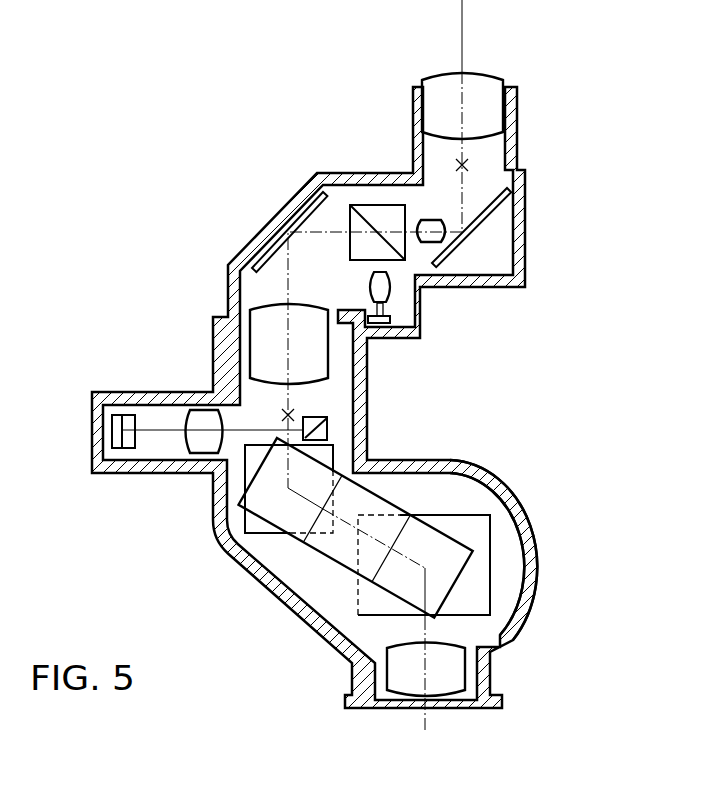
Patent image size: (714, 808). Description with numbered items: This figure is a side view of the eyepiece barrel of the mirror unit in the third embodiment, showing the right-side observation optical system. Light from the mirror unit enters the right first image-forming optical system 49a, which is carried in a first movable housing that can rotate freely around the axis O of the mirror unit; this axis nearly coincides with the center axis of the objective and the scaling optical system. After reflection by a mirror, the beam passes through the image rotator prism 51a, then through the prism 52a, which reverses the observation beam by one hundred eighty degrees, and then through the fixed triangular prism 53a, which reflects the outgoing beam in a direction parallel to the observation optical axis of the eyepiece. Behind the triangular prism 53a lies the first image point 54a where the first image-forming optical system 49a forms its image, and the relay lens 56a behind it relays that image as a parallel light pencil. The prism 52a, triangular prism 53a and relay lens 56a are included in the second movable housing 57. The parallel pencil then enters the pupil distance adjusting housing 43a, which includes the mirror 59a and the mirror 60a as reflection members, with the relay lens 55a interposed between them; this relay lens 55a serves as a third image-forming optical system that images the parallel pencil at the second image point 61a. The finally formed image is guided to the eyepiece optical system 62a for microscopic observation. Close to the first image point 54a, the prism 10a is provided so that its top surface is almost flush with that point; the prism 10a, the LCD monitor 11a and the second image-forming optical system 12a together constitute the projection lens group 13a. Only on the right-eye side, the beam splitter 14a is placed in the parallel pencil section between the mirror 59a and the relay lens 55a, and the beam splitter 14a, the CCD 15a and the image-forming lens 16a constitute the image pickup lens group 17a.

The axis O is at (462, 18).
The eyepiece optical system 62a is at (488, 82).
The second image point 61a is at (470, 163).
The pupil distance adjusting housing 43a is at (525, 193).
The mirror 60a is at (487, 212).
The relay lens 55a is at (455, 248).
The mirror 59a is at (283, 222).
The relay lens 56a is at (320, 363).
The first image point 54a is at (302, 410).
The prism 10a is at (278, 427).
The projection lens group 13a is at (135, 373).
The LCD monitor 11a is at (115, 415).
The second image-forming optical system 12a is at (205, 333).
The image pickup lens group 17a is at (454, 299).
The beam splitter 14a is at (416, 245).
The image-forming lens 16a is at (392, 298).
The CCD 15a is at (390, 324).
The second movable housing 57 is at (452, 462).
The prism 52a is at (337, 553).
The triangular prism 53a is at (252, 530).
The image rotator prism 51a is at (480, 602).
The first image-forming optical system 49a is at (445, 690).